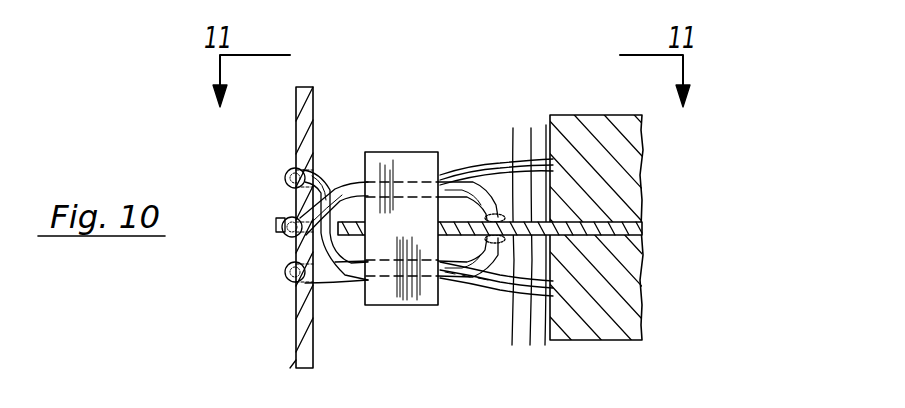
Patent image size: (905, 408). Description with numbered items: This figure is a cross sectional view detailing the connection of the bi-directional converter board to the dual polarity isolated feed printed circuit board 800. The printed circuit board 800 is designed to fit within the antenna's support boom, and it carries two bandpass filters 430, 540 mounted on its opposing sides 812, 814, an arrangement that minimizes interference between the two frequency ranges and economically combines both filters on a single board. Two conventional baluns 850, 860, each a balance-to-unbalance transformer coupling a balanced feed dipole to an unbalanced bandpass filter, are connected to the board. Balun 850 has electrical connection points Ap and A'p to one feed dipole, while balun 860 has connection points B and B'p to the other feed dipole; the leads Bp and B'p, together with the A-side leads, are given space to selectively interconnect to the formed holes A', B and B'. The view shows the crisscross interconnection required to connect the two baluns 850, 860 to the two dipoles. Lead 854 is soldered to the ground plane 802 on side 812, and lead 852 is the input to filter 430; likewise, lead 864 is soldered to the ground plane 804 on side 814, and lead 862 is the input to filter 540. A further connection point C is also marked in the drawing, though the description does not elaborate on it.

The bandpass filter 430 is at (625, 172).
The bandpass filter 540 is at (632, 283).
The printed circuit board 800 is at (642, 230).
The balun 850 is at (410, 165).
The primary output lead 852 is at (490, 168).
The primary output lead 854 is at (507, 159).
The ground plane 802 is at (520, 376).
The side 812 is at (538, 343).
The ground plane 804 is at (492, 323).
The side 814 is at (529, 251).
The balun 860 is at (402, 305).
The lead 862 is at (493, 283).
The lead 864 is at (500, 289).
The formed hole B is at (284, 146).
The fiber port C is at (276, 223).
The formed hole A' is at (263, 253).
The formed hole B' is at (277, 303).
The lead Bp is at (320, 162).
The primary input lead A'p is at (353, 159).
The lead B'p is at (339, 311).